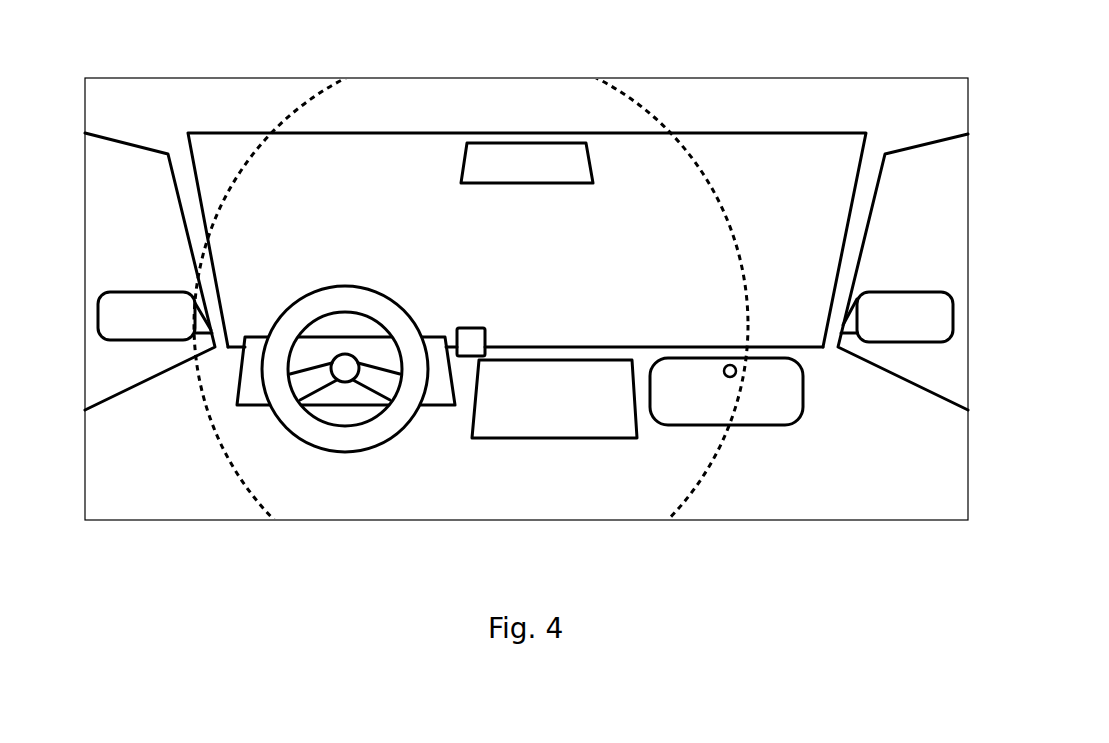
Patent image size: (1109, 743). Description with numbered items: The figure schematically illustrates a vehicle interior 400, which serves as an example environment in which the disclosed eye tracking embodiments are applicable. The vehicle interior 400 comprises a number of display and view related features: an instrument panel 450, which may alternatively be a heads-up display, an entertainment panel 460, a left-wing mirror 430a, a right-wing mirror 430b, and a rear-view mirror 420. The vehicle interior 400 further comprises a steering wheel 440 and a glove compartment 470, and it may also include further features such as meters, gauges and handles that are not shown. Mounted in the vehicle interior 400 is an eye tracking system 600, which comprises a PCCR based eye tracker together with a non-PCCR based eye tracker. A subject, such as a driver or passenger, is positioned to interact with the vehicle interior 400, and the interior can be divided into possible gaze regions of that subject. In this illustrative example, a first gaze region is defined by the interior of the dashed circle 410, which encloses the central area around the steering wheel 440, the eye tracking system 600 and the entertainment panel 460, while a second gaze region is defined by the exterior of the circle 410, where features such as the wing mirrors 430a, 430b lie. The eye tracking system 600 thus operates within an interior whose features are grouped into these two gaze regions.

The vehicle interior 400 is at (808, 47).
The circle 410 is at (230, 462).
The rear-view mirror 420 is at (563, 183).
The left-wing mirror 430a is at (147, 291).
The right-wing mirror 430b is at (912, 291).
The steering wheel 440 is at (347, 286).
The instrument panel 450 is at (427, 407).
The entertainment panel 460 is at (555, 438).
The glove compartment 470 is at (760, 425).
The eye tracking system 600 is at (477, 328).